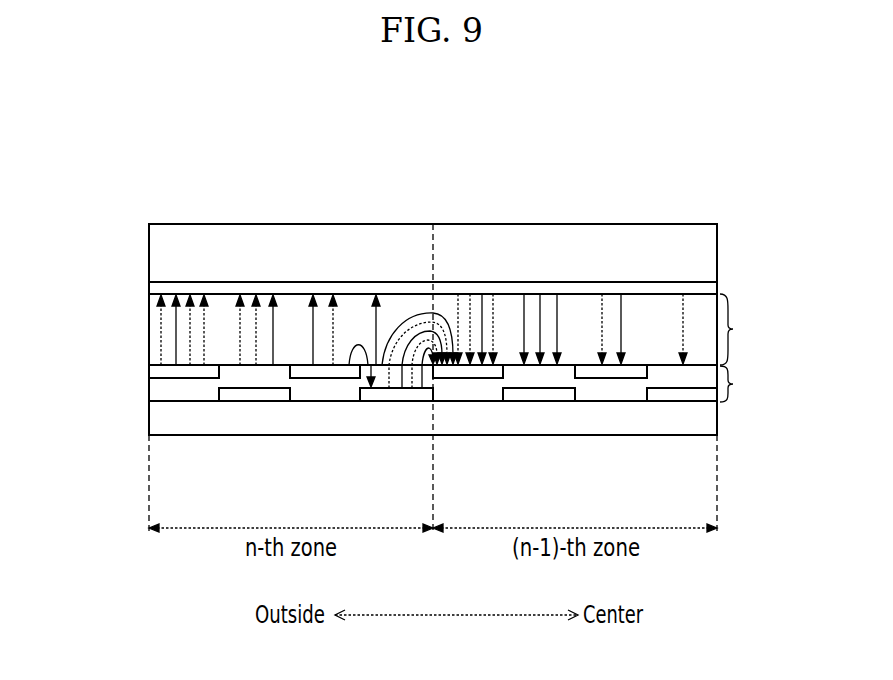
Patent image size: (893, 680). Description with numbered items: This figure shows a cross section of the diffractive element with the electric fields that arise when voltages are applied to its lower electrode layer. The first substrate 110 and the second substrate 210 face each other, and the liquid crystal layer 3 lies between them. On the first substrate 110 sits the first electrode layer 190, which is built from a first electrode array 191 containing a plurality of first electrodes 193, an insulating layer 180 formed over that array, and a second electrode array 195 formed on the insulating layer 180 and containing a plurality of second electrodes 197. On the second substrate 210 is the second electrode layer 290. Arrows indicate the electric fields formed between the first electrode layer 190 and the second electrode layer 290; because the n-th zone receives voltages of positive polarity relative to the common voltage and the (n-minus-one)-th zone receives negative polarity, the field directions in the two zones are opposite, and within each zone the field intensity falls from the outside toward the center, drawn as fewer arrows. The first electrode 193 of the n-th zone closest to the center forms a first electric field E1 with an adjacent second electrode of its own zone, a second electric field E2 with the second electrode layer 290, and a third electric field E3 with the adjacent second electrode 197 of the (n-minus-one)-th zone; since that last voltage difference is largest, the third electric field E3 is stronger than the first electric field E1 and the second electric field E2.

The first substrate 110 is at (602, 417).
The insulating layer 180 is at (472, 392).
The first electrode layer 190 is at (419, 430).
The first electrode array 191 is at (392, 443).
The first electrode 193 is at (252, 397).
The second electrode array 195 is at (357, 430).
The second electrode 197 is at (327, 372).
The second substrate 210 is at (575, 242).
The second electrode layer 290 is at (150, 288).
The liquid crystal layer 3 is at (448, 341).
The first electric field E1 is at (358, 338).
The second electric field E2 is at (378, 317).
The third electric field E3 is at (436, 316).